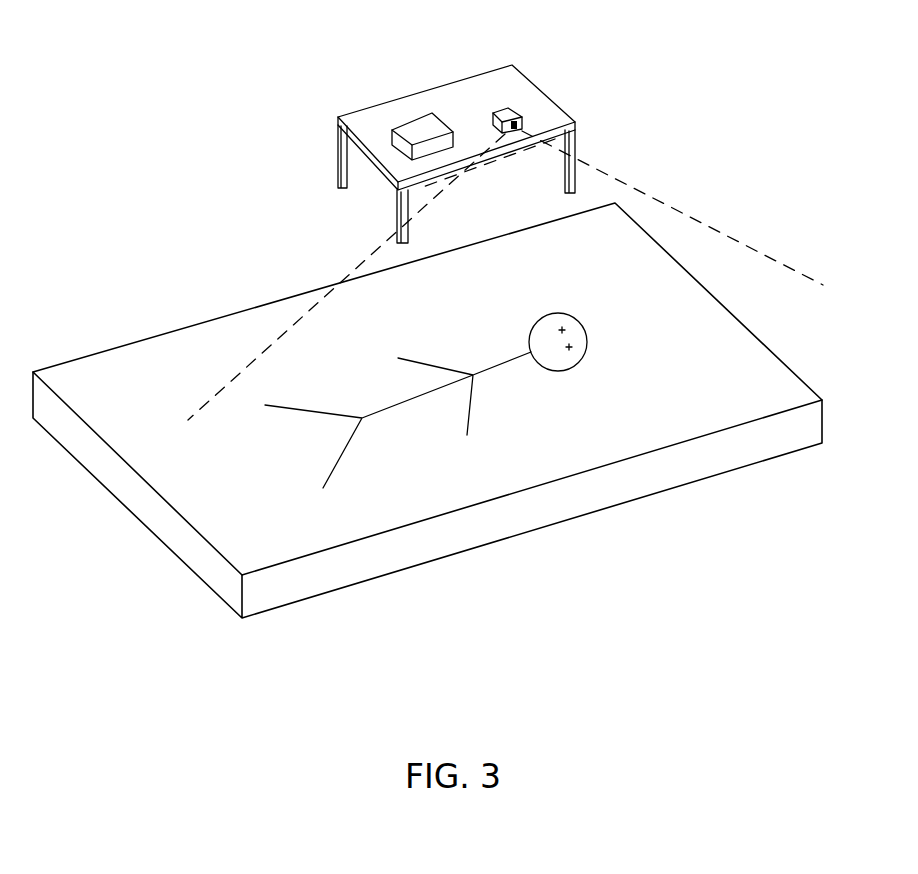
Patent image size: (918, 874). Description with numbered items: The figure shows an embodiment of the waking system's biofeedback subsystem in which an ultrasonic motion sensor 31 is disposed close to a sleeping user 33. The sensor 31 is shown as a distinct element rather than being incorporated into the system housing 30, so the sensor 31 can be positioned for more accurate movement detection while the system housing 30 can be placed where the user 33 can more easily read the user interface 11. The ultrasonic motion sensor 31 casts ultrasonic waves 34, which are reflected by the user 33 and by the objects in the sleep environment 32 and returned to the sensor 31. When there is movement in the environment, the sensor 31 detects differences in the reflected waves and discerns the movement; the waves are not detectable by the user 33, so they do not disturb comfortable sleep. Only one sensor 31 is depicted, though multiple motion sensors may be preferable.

The user interface 11 is at (440, 137).
The system housing 30 is at (403, 126).
The ultrasonic motion sensor 31 is at (520, 118).
The sleep environment 32 is at (613, 485).
The user 33 is at (337, 468).
The ultrasonic waves 34 is at (707, 226).